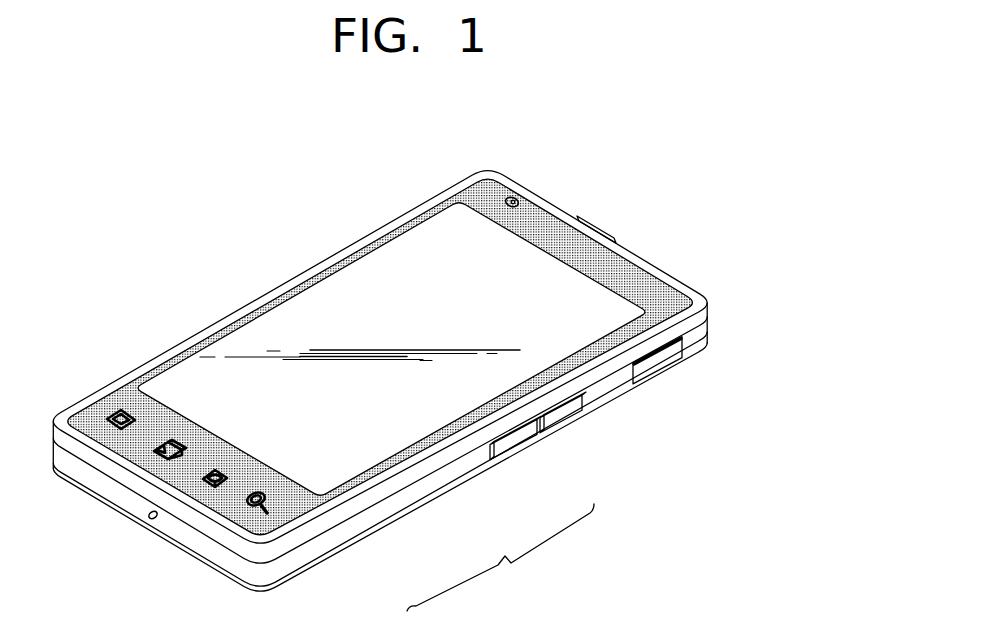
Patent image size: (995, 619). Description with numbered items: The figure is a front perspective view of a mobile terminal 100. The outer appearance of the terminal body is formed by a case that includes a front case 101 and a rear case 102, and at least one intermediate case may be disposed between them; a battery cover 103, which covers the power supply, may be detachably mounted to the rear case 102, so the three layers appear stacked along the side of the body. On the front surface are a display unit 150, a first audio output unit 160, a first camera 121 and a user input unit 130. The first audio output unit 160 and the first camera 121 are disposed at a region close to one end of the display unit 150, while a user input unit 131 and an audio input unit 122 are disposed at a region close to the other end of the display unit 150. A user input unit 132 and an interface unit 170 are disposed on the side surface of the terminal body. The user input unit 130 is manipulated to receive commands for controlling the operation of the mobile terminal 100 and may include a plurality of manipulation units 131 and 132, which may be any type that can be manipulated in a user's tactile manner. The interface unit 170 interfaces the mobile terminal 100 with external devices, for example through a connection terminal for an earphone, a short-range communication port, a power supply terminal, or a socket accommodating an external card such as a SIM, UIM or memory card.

The mobile terminal 100 is at (340, 222).
The front case 101 is at (698, 316).
The rear case 102 is at (698, 336).
The battery cover 103 is at (695, 352).
The first camera 121 is at (517, 200).
The audio input unit 122 is at (148, 518).
The user input unit 130 is at (500, 557).
The user input unit (manipulation unit) 131 is at (267, 505).
The user input unit (manipulation unit) 132 is at (515, 443).
The display unit 150 is at (312, 287).
The first audio output unit 160 is at (600, 228).
The interface unit 170 is at (653, 368).